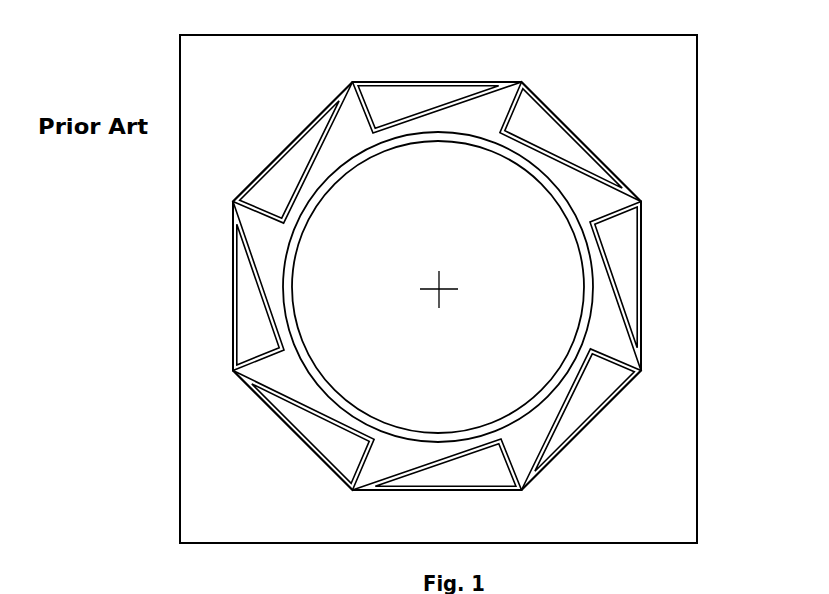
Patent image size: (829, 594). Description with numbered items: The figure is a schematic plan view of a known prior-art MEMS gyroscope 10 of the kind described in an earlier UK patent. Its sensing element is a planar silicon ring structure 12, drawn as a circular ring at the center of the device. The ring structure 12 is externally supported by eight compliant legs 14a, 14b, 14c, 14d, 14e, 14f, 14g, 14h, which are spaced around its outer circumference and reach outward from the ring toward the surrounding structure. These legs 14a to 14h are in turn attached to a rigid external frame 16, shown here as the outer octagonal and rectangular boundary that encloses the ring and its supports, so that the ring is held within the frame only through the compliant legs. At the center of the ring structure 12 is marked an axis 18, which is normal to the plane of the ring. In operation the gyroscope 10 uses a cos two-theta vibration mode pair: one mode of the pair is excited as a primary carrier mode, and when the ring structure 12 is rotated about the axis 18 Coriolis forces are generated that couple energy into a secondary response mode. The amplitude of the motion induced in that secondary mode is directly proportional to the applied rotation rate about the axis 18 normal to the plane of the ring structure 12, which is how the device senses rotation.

The MEMS gyroscope 10 is at (459, 289).
The planar silicon ring structure 12 is at (553, 182).
The compliant leg 14a is at (563, 163).
The compliant leg 14b is at (618, 273).
The compliant leg 14c is at (571, 398).
The compliant leg 14d is at (455, 458).
The compliant leg 14e is at (307, 412).
The compliant leg 14f is at (262, 300).
The compliant leg 14g is at (314, 158).
The compliant leg 14h is at (428, 108).
The rigid external frame 16 is at (670, 433).
The axis 18 is at (436, 286).